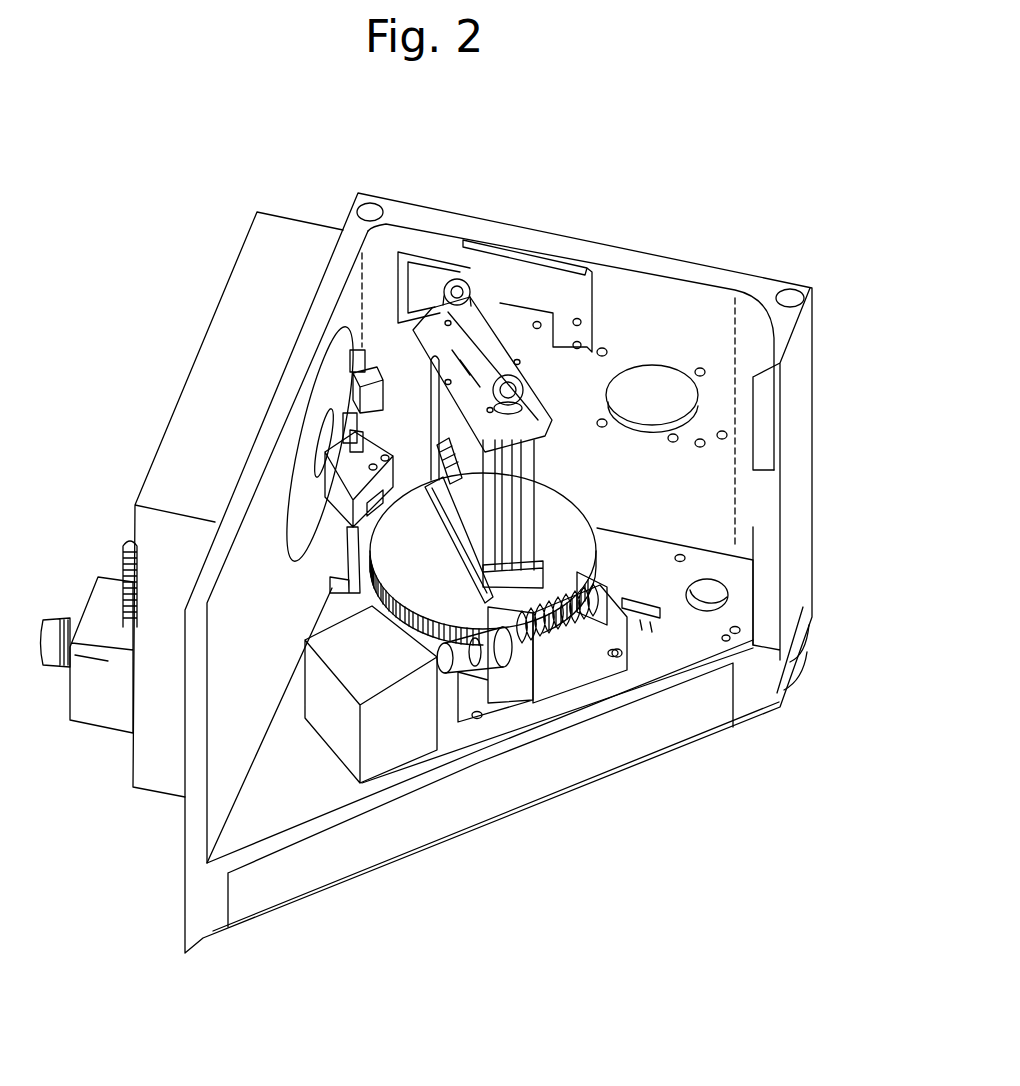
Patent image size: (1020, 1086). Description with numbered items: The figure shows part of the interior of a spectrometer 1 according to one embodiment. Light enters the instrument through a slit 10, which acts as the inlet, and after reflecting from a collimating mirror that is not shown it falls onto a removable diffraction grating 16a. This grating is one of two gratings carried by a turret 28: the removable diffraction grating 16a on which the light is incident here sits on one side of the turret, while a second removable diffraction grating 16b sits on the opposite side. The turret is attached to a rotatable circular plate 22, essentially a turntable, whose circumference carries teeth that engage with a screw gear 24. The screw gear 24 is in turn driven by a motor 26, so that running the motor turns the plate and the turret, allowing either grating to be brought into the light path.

The spectrometer 1 is at (212, 147).
The slit 10 is at (318, 437).
The removable diffraction grating 16a is at (457, 427).
The removable diffraction grating 16b is at (550, 507).
The rotatable circular plate 22 is at (573, 542).
The screw gear 24 is at (562, 622).
The motor 26 is at (378, 682).
The turret 28 is at (487, 337).